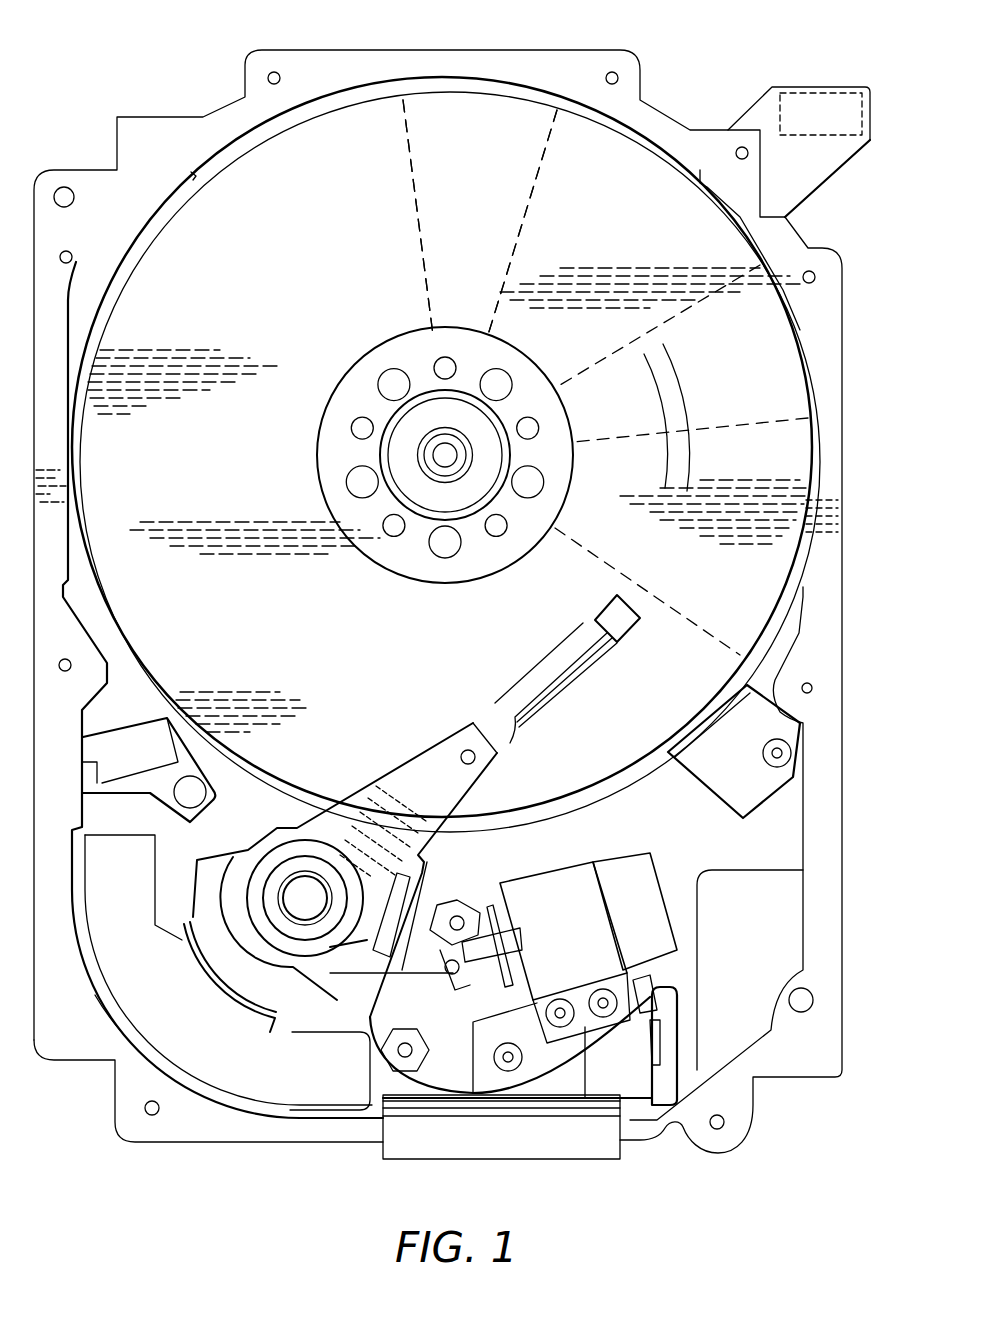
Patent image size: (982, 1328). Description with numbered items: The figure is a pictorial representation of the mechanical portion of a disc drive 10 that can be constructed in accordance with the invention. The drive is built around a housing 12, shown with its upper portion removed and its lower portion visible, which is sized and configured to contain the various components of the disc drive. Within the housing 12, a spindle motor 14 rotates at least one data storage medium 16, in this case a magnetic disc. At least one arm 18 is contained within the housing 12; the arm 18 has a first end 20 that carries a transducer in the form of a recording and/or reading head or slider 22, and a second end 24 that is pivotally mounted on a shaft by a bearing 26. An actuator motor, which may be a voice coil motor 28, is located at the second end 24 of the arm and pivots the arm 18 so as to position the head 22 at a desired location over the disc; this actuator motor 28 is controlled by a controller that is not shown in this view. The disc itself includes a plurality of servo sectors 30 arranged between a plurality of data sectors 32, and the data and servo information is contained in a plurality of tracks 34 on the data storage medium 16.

The disc drive 10 is at (93, 103).
The housing 12 is at (588, 64).
The spindle motor 14 is at (440, 458).
The data storage medium 16 is at (353, 236).
The arm 18 is at (430, 773).
The first end 20 is at (557, 650).
The head 22 is at (612, 615).
The second end 24 is at (330, 837).
The bearing 26 is at (293, 890).
The voice coil motor 28 is at (191, 1024).
The servo sectors 30 is at (465, 115).
The data sectors 32 is at (635, 185).
The tracks 34 is at (672, 393).